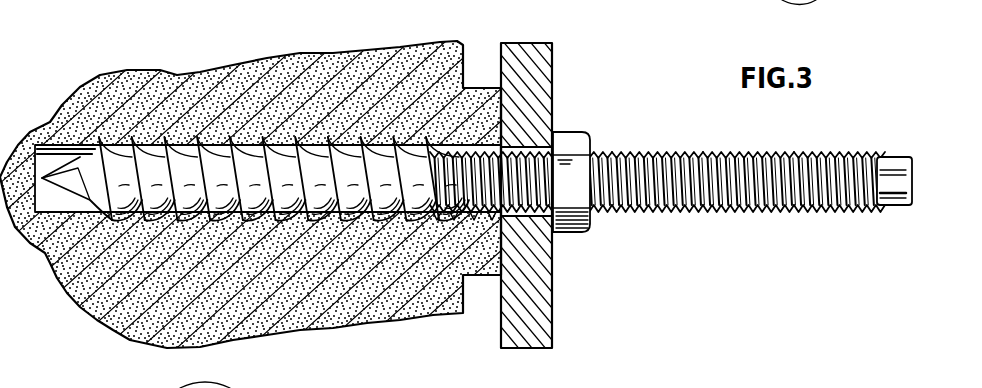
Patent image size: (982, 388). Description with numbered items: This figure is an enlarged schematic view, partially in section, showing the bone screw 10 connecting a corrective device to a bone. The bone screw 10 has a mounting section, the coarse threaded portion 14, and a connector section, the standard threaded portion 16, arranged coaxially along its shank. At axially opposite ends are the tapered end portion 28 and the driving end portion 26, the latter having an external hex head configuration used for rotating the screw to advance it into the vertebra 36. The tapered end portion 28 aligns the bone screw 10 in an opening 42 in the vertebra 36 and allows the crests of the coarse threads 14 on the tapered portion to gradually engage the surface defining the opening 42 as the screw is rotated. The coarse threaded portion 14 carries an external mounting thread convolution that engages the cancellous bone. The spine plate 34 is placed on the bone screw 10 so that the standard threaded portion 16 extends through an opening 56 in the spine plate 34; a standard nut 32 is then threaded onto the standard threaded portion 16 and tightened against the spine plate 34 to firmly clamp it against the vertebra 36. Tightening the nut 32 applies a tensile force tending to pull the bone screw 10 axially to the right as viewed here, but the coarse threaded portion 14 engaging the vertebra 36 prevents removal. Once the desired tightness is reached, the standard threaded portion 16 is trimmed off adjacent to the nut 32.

The bone screw 10 is at (475, 146).
The coarse threaded portion 14 is at (273, 135).
The standard threaded portion 16 is at (743, 216).
The driving end portion 26 is at (895, 178).
The tapered end portion 28 is at (66, 178).
The nut 32 is at (567, 143).
The spine plate 34 is at (591, 44).
The vertebra 36 is at (380, 63).
The opening 42 is at (72, 212).
The opening 56 is at (552, 242).